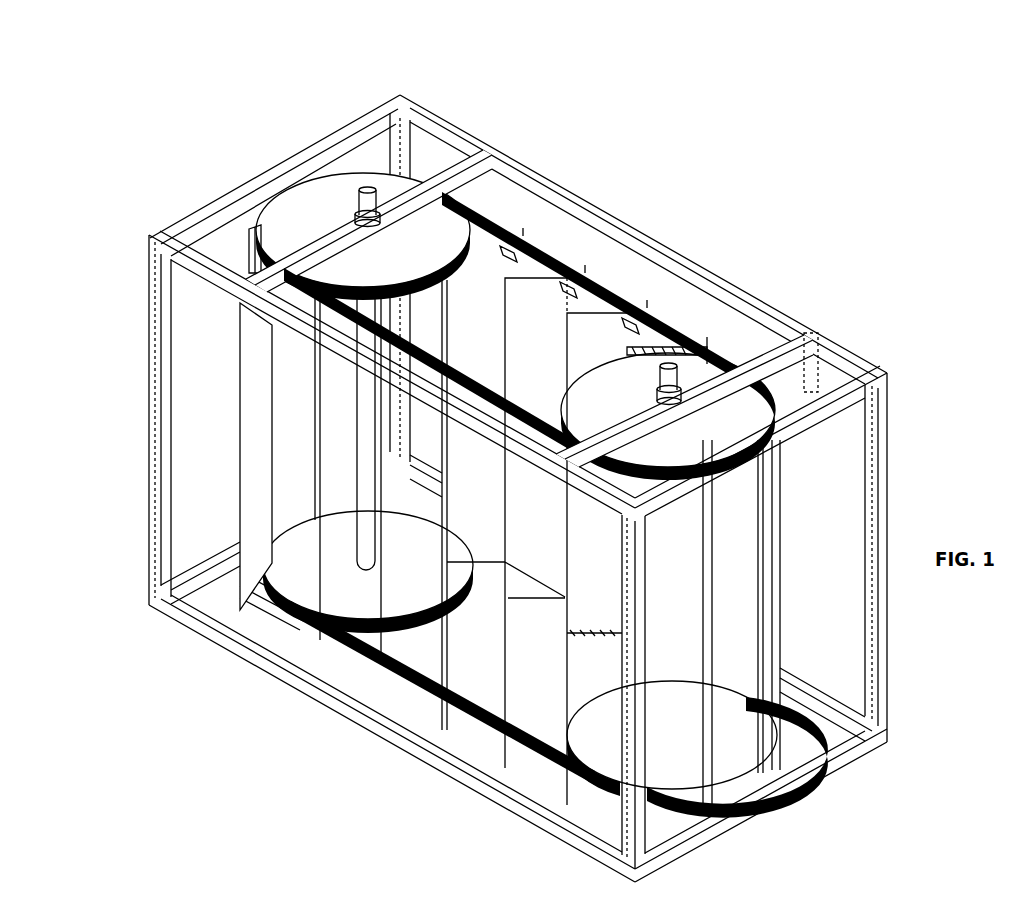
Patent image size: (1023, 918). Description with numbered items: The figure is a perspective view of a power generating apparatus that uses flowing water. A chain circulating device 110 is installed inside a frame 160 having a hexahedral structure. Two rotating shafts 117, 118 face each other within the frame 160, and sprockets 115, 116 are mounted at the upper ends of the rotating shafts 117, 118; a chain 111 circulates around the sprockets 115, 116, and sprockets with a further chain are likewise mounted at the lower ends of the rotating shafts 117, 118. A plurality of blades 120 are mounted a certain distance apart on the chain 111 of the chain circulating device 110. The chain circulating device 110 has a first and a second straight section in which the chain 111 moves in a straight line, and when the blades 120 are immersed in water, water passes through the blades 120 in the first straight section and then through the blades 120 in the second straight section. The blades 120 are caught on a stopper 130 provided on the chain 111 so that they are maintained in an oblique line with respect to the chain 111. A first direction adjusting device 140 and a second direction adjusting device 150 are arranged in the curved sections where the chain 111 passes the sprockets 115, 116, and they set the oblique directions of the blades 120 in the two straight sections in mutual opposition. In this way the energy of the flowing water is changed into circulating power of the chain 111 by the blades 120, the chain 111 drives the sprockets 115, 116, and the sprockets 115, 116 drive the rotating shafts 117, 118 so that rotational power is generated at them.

The chain circulating device 110 is at (518, 464).
The chain 111 is at (578, 300).
The sprocket 115 is at (668, 342).
The sprocket 116 is at (458, 290).
The rotating shaft 117 is at (745, 483).
The rotating shaft 118 is at (372, 187).
The blade 120 is at (584, 262).
The stopper 130 is at (555, 290).
The first direction adjusting device 140 is at (806, 388).
The second direction adjusting device 150 is at (366, 341).
The frame 160 is at (237, 178).